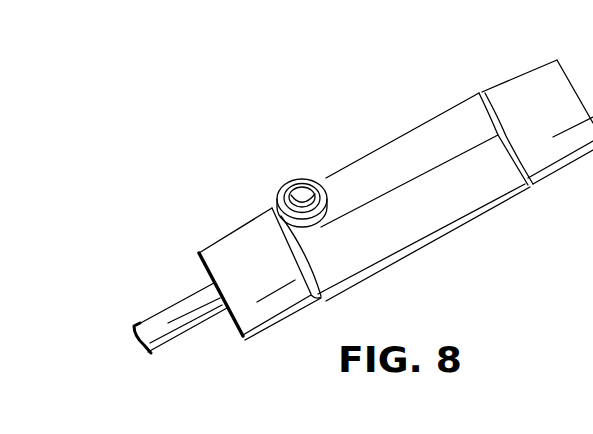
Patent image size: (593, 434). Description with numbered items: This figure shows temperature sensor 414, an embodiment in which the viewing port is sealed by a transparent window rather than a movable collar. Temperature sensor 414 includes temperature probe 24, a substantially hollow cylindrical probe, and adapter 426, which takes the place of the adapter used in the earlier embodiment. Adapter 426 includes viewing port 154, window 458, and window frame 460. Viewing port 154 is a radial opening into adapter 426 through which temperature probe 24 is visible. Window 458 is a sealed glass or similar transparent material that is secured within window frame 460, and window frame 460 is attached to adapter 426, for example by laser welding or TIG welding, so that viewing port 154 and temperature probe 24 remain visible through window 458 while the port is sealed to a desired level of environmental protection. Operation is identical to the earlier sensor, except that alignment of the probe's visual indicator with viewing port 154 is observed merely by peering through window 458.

The temperature probe 24 is at (168, 308).
The viewing port 154 is at (300, 203).
The window 458 is at (304, 197).
The window frame 460 is at (313, 181).
The adapter 426 is at (424, 119).
The temperature sensor 414 is at (480, 91).